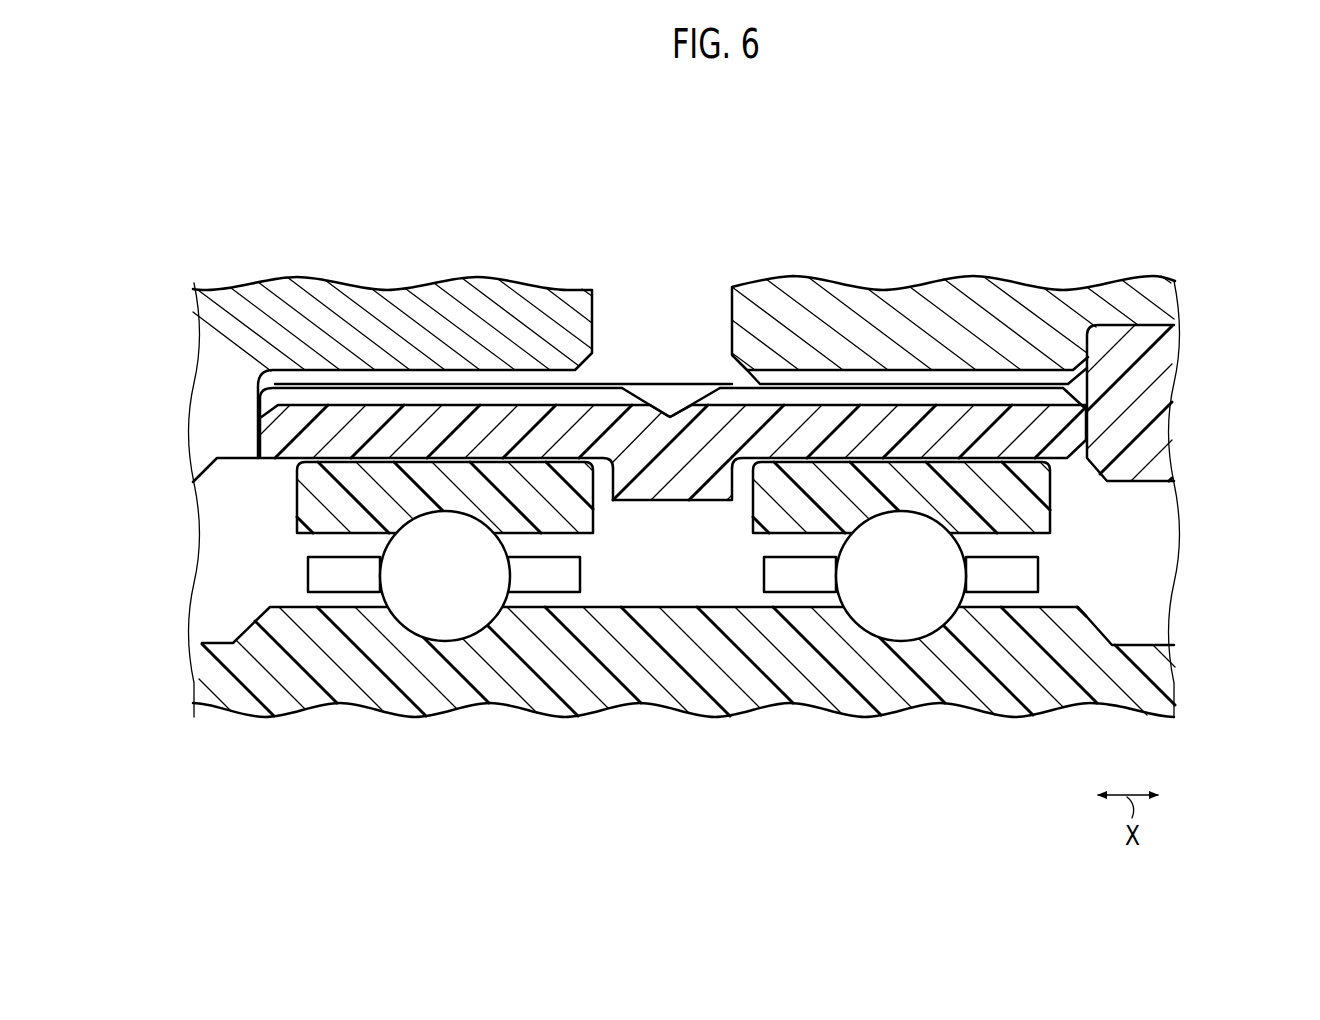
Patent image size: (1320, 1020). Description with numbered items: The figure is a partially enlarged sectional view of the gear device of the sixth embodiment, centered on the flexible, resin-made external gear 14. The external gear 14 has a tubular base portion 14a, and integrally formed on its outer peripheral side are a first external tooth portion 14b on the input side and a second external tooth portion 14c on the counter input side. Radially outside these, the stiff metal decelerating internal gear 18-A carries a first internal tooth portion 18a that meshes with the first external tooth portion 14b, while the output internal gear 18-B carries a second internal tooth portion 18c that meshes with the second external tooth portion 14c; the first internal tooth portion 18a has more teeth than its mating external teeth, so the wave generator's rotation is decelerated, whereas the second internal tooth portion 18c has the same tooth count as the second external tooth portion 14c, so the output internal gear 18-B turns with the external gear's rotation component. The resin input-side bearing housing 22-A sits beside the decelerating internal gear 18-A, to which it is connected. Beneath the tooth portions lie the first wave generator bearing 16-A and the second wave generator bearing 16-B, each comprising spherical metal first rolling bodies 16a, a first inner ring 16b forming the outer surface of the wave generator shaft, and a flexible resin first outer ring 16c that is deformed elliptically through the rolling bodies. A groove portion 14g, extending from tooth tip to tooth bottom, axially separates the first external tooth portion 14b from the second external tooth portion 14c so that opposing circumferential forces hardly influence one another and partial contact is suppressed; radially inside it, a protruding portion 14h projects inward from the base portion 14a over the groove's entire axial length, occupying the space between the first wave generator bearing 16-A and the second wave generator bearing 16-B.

The external gear 14 is at (672, 504).
The base portion 14a is at (597, 430).
The first external tooth portion 14b is at (930, 397).
The second external tooth portion 14c is at (470, 395).
The groove portion 14g is at (670, 412).
The protruding portion 14h is at (700, 484).
The first wave generator bearing 16-A is at (1082, 543).
The second wave generator bearing 16-B is at (336, 620).
The first rolling bodies 16a is at (445, 590).
The first inner ring 16b is at (552, 582).
The first outer ring 16c is at (330, 512).
The decelerating internal gear 18-A is at (953, 290).
The output internal gear 18-B is at (462, 333).
The first internal tooth portion 18a is at (820, 395).
The second internal tooth portion 18c is at (362, 394).
The input-side bearing housing 22-A is at (1197, 394).